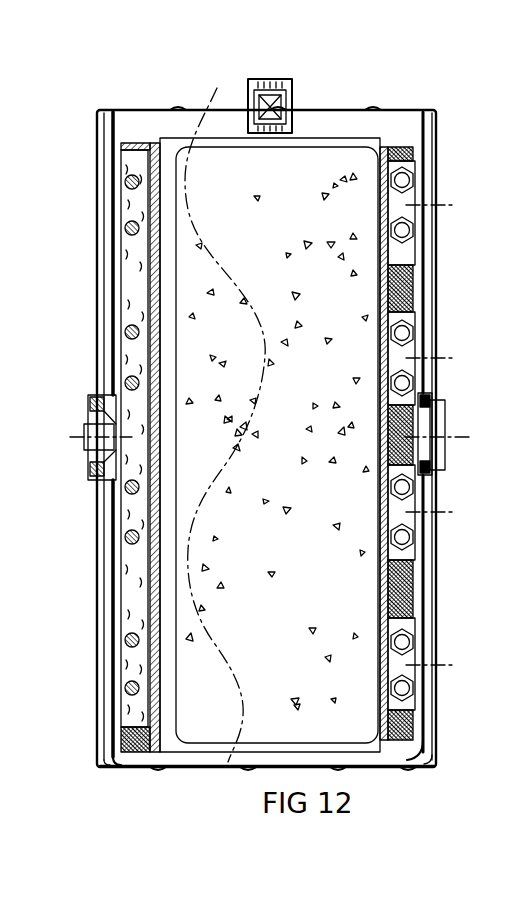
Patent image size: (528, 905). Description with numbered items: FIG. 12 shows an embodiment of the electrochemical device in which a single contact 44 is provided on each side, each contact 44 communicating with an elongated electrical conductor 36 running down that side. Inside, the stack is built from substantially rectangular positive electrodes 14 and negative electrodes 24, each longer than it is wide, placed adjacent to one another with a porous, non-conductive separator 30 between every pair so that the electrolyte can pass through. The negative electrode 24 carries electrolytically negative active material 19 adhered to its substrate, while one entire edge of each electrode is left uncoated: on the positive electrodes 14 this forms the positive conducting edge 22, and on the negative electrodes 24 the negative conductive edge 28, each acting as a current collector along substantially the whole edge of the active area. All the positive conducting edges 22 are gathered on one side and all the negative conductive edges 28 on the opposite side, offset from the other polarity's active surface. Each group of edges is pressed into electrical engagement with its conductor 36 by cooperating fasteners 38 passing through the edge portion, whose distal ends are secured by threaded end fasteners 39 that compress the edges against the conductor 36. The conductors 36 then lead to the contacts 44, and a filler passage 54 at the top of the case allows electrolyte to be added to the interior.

The positive electrode 14 is at (152, 142).
The electrolytically negative active material 19 is at (342, 567).
The positive conducting edge 22 is at (120, 755).
The negative electrode 24 is at (415, 148).
The negative conductive edge 28 is at (405, 742).
The separator 30 is at (172, 750).
The elongated electrical conductor 36 is at (130, 292).
The cooperating fastener 38 is at (132, 228).
The end fastener 39 is at (408, 322).
The contact 44 is at (90, 437).
The filler passage 54 is at (272, 82).